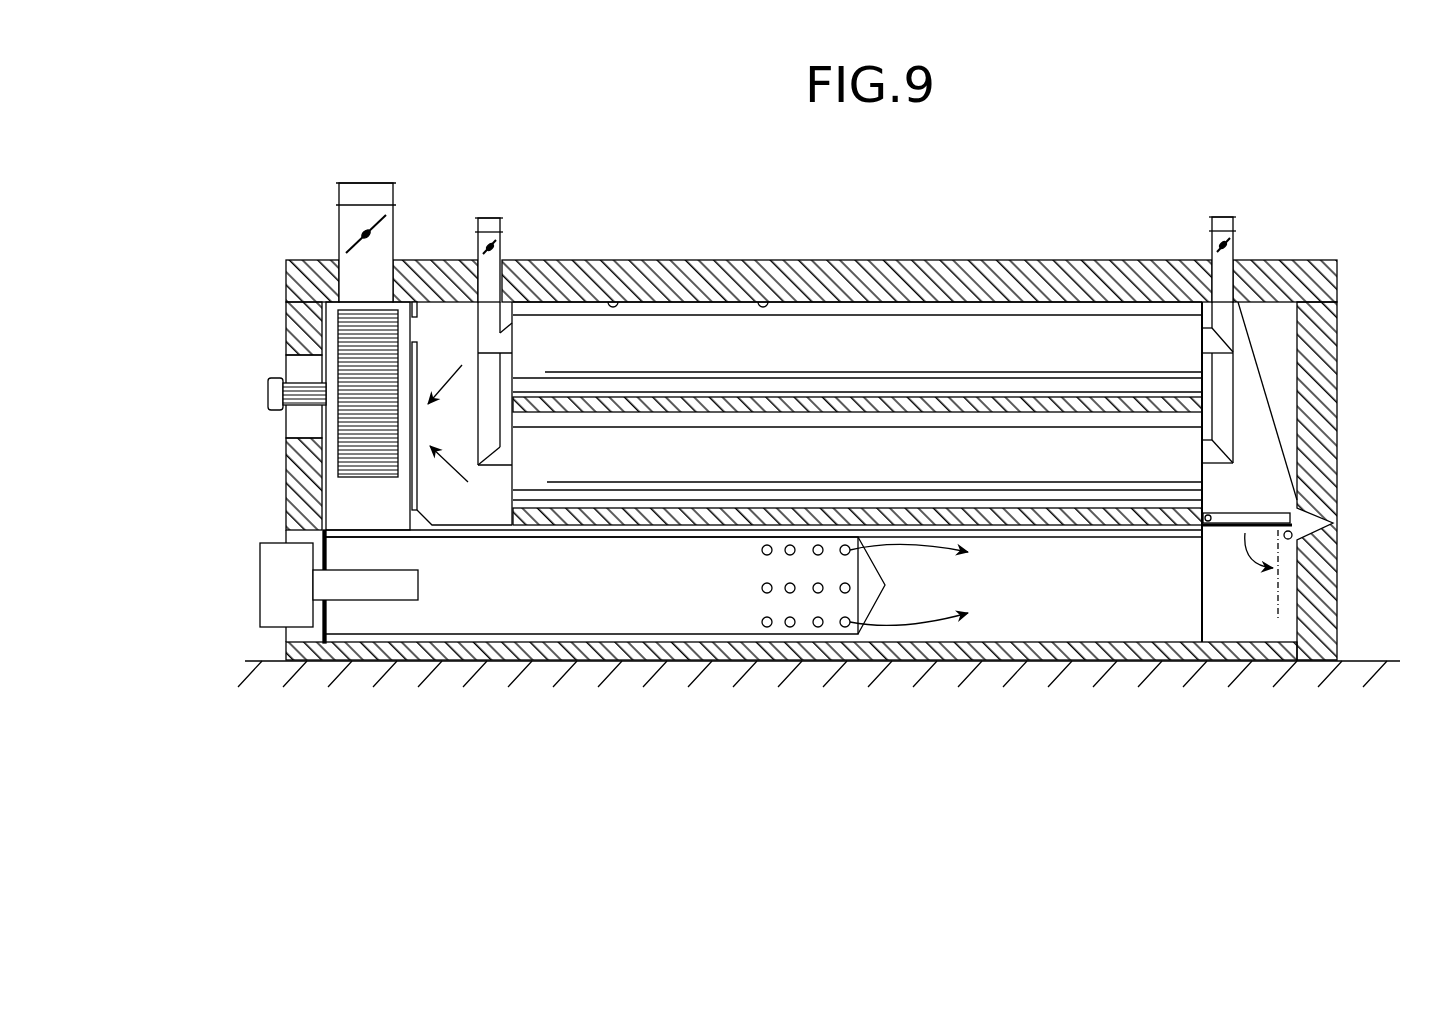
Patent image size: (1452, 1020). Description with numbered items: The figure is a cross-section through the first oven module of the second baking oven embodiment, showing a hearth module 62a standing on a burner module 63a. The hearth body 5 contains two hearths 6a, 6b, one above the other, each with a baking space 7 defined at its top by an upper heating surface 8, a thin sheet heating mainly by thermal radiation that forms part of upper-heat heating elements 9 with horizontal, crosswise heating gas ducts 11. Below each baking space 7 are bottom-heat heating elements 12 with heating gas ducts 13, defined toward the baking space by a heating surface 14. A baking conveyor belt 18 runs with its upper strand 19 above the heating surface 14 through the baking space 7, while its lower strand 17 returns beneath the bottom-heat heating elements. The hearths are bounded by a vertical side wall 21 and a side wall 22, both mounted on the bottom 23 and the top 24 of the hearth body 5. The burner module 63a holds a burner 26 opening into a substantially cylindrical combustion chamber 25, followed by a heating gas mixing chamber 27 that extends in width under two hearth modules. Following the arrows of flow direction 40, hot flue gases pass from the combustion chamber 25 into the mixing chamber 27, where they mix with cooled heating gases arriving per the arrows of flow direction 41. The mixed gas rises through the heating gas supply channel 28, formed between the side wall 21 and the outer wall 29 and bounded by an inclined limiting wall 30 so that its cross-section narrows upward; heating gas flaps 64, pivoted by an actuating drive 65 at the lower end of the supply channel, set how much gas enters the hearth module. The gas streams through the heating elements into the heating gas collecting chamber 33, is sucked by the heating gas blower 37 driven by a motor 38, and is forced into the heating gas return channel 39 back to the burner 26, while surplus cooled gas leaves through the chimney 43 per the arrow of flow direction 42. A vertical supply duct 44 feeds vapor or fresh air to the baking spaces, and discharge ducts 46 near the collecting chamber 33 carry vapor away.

The hearth body 5 is at (1197, 585).
The hearth 6a is at (1067, 456).
The hearth 6b is at (1055, 346).
The baking space 7 is at (890, 355).
The upper heating surface 8 is at (768, 323).
The upper-heat heating elements 9 is at (691, 313).
The heating gas ducts 11 is at (842, 310).
The bottom-heat heating elements 12 is at (707, 392).
The heating gas ducts 13 is at (789, 384).
The heating surface 14 is at (657, 378).
The lower strand 17 is at (760, 508).
The baking conveyor belt 18 is at (649, 482).
The upper strand 19 is at (707, 482).
The side wall 21 is at (1203, 628).
The side wall 22 is at (512, 483).
The bottom 23 is at (1085, 655).
The top 24 is at (617, 303).
The combustion chamber 25 is at (614, 602).
The burner 26 is at (286, 568).
The heating gas mixing chamber 27 is at (1050, 600).
The heating gas supply channel 28 is at (1280, 493).
The outer wall 29 is at (1322, 412).
The limiting wall 30 is at (1262, 362).
The heating gas collecting chamber 33 is at (427, 316).
The heating gas blower 37 is at (362, 362).
The motor 38 is at (276, 397).
The heating gas return channel 39 is at (358, 514).
The arrows of flow direction 40 is at (915, 623).
The arrows of flow direction 41 is at (410, 562).
The arrow of flow direction 42 is at (407, 325).
The chimney 43 is at (347, 198).
The supply duct 44 is at (1218, 228).
The discharge ducts 46 is at (492, 230).
The hearth module 62a is at (989, 253).
The burner module 63a is at (1345, 590).
The heating gas flaps 64 is at (1228, 533).
The actuating drive 65 is at (1293, 535).